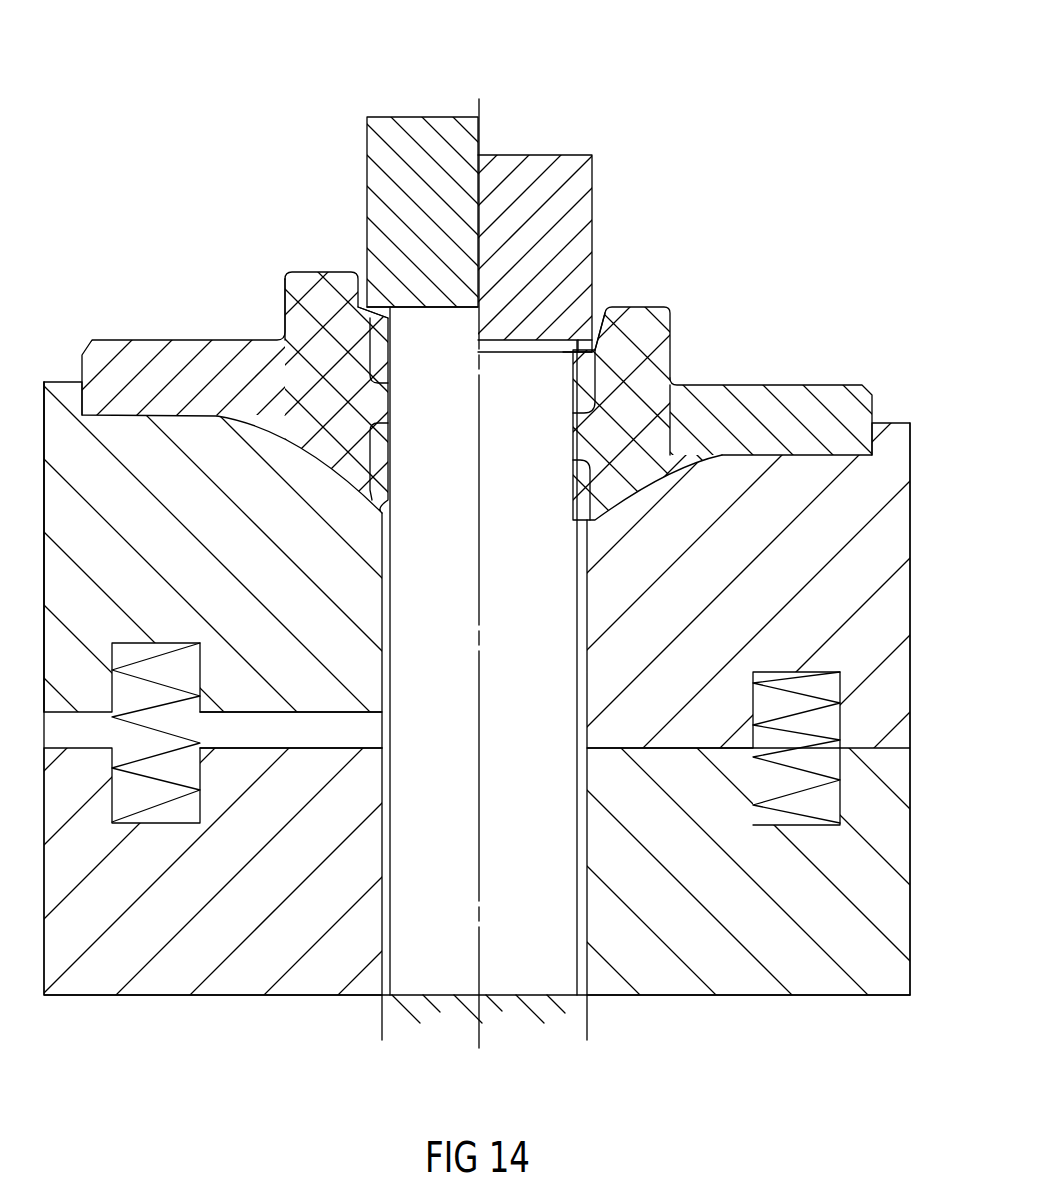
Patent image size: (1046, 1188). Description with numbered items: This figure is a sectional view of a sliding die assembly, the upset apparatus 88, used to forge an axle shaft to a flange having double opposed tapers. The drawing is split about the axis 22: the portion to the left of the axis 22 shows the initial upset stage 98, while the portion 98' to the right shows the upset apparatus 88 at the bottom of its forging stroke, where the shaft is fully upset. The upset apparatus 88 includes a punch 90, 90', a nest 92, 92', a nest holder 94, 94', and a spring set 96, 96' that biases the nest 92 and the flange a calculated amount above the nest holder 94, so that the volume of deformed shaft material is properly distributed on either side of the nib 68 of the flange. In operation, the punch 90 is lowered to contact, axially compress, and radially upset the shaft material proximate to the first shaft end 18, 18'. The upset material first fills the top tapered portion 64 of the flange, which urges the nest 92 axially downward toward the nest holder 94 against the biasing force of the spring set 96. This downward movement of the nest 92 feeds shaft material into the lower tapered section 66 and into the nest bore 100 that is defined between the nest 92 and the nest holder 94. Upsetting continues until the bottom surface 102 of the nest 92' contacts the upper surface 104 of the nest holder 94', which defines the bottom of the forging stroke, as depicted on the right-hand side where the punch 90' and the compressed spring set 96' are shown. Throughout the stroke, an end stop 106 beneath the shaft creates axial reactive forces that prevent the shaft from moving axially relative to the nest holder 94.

The first shaft end 18 is at (354, 269).
The first shaft end 18' is at (621, 307).
The axis 22 is at (478, 943).
The top tapered portion 64 is at (364, 340).
The lower tapered section 66 is at (367, 450).
The nib 68 is at (575, 437).
The upset apparatus 88 is at (46, 375).
The punch 90 is at (400, 226).
The punch 90' is at (540, 245).
The nest 92 is at (175, 368).
The nest 92' is at (783, 433).
The nest holder 94 is at (213, 711).
The nest holder 94' is at (748, 745).
The spring set 96 is at (200, 732).
The spring set 96' is at (744, 761).
The initial upset stage 98 is at (240, 220).
The fully upset portion 98' is at (712, 270).
The nest bore 100 is at (380, 608).
The bottom surface 102 is at (330, 716).
The upper surface 104 is at (322, 745).
The end stop 106 is at (518, 1017).